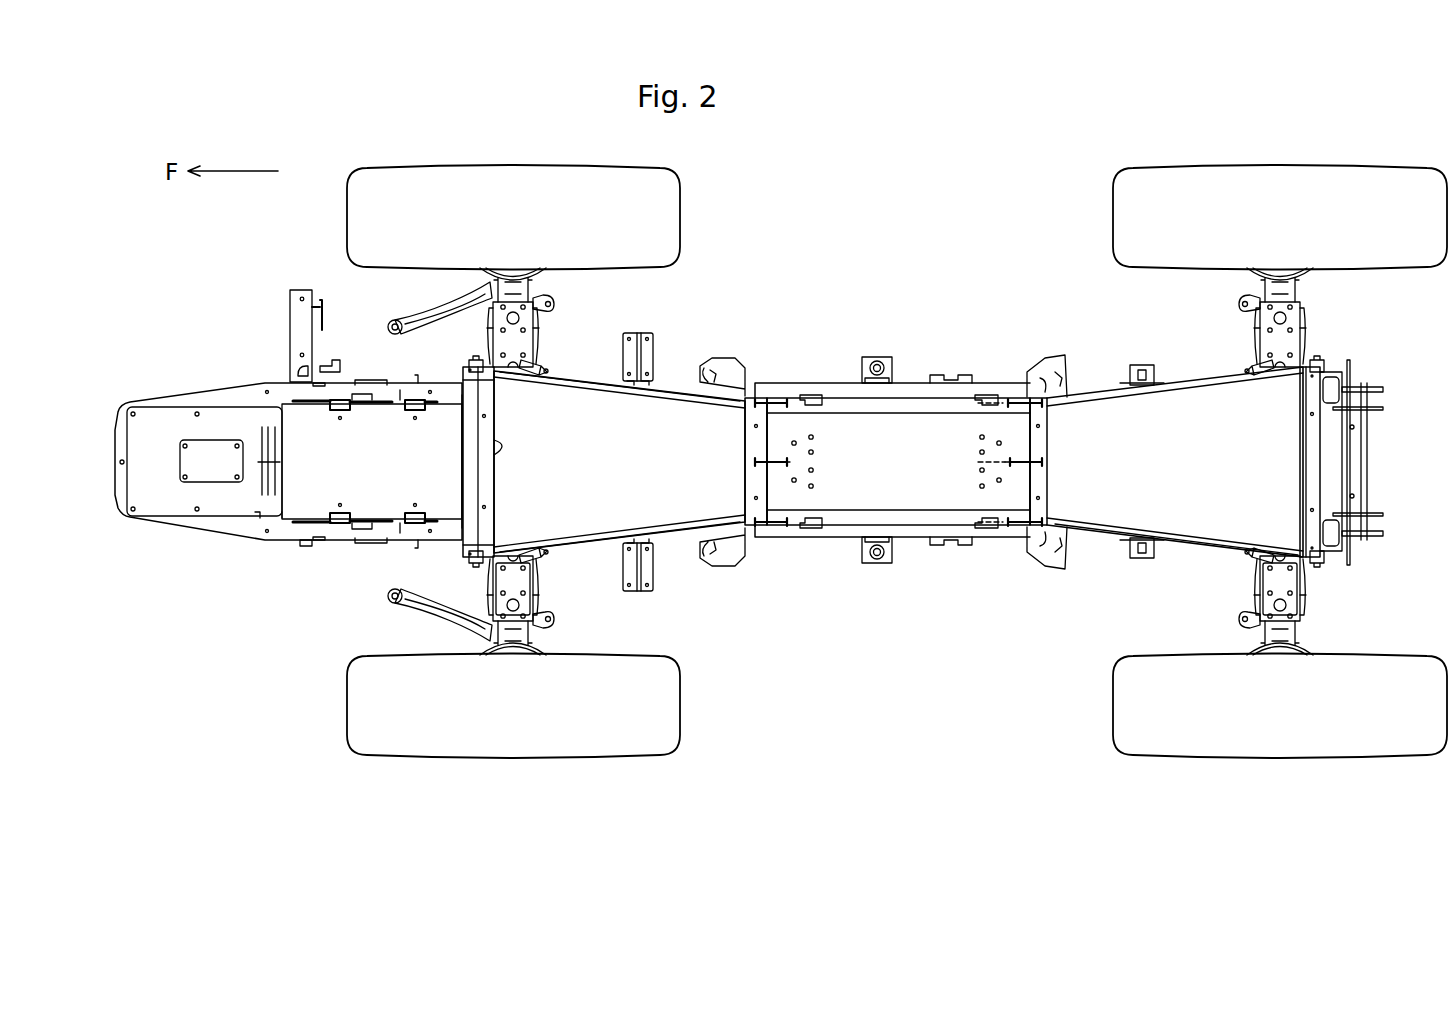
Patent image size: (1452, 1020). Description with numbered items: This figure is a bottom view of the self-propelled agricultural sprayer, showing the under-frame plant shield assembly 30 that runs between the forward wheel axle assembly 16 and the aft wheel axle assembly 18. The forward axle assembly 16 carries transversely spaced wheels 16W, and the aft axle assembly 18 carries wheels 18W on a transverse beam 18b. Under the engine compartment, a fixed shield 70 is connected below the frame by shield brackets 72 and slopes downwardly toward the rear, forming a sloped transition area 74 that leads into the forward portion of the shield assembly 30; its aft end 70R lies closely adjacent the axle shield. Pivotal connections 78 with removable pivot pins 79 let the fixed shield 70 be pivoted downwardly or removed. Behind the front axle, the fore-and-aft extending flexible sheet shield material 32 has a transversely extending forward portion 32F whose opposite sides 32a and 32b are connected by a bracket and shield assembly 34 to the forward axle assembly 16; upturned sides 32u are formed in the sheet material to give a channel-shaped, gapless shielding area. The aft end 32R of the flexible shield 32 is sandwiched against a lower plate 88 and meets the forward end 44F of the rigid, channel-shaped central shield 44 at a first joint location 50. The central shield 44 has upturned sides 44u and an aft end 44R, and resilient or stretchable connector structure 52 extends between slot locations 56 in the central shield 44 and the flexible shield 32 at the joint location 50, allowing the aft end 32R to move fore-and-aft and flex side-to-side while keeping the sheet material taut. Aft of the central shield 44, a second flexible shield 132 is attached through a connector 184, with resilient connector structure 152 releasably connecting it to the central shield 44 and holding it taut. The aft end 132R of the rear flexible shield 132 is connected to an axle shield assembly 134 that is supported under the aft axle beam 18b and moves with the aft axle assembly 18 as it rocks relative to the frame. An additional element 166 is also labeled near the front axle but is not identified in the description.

The forward wheel axle assembly 16 is at (318, 675).
The wheels 16W is at (470, 173).
The aft wheel axle assembly 18 is at (1078, 671).
The wheels 18W is at (1188, 172).
The transverse beam 18b is at (1287, 583).
The under-frame plant shield assembly 30 is at (753, 320).
The flexible sheet shield material 32 is at (612, 453).
The side 32a is at (495, 387).
The side 32b is at (493, 538).
The forward portion 32F is at (467, 452).
The aft end 32R is at (745, 440).
The upturned sides 32u is at (670, 393).
The bracket and shield assembly 34 is at (444, 440).
The rigid central shield 44 is at (929, 453).
The forward end 44F is at (775, 480).
The aft end 44R is at (1020, 493).
The upturned sides 44u is at (915, 387).
The first joint location 50 is at (755, 554).
The resilient connector structure 52 is at (773, 398).
The slot locations 56 is at (817, 400).
The fixed shield 70 is at (318, 477).
The aft end 70R is at (458, 482).
The shield brackets 72 is at (420, 400).
The sloped transition area 74 is at (286, 437).
The pivotal connections 78 is at (303, 415).
The removable pivot pins 79 is at (353, 399).
The lower plate 88 is at (752, 470).
The second flexible shield 132 is at (1183, 402).
The aft end 132R is at (1293, 525).
The axle shield assembly 134 is at (1290, 446).
The resilient connector structure 152 is at (1020, 398).
The front lower hub plate 166 is at (528, 598).
The connector 184 is at (1050, 442).